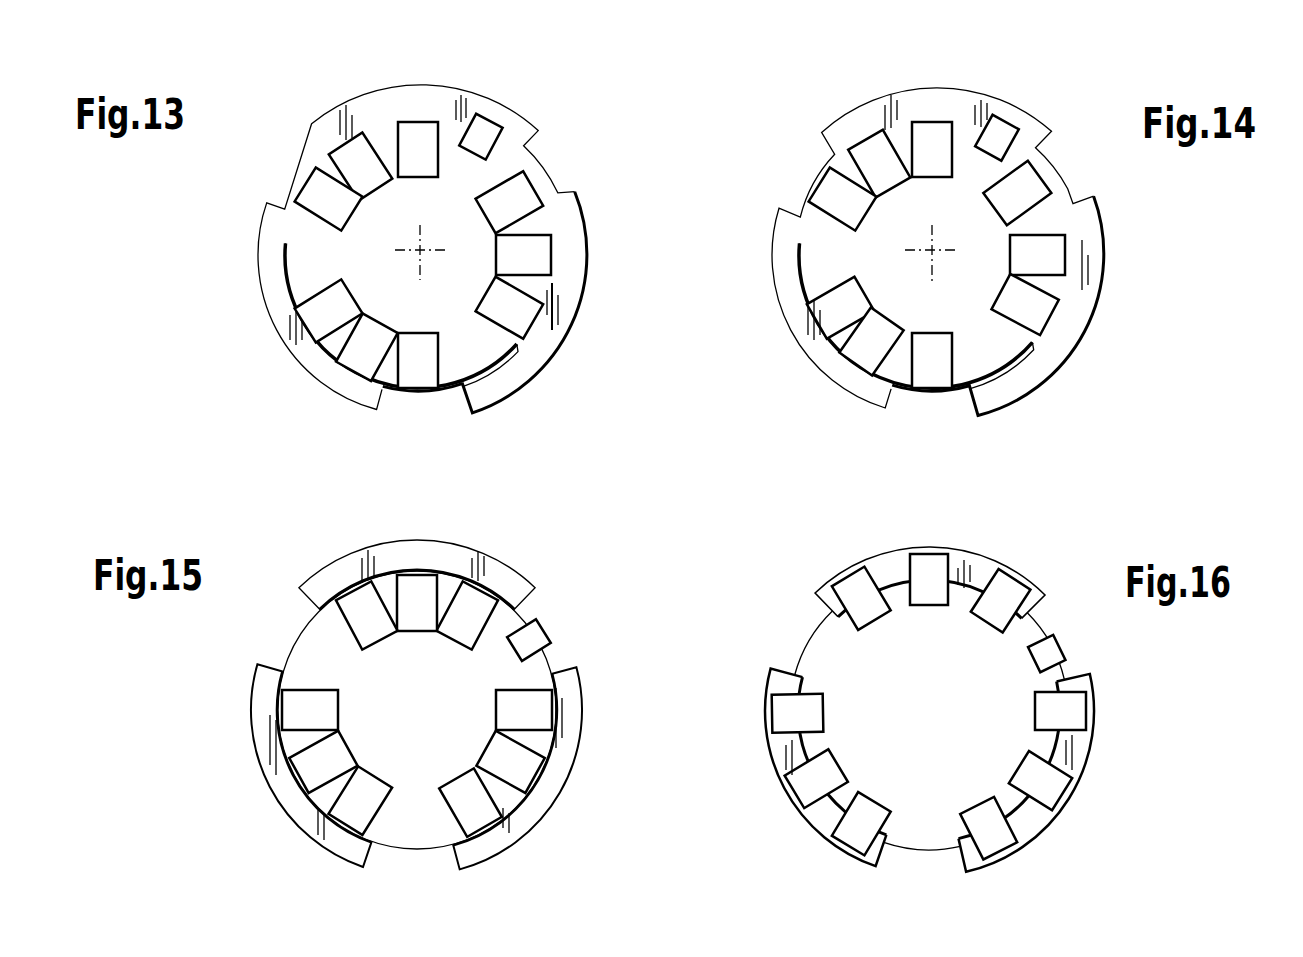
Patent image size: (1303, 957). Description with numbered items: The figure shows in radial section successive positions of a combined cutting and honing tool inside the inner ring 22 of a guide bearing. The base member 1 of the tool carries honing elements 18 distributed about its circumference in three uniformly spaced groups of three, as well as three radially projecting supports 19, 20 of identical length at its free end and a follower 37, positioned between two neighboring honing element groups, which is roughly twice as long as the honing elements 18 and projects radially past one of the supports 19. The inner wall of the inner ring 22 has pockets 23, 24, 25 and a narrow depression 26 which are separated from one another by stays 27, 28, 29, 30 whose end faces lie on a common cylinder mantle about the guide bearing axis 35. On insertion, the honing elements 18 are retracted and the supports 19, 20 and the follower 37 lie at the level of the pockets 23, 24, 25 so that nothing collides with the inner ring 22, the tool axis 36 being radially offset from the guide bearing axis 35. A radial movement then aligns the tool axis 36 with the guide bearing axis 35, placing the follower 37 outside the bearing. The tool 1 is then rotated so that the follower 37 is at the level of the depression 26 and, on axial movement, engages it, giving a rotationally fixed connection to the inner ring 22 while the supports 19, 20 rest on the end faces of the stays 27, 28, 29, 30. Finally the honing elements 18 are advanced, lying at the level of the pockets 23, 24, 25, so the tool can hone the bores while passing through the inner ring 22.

In FIG. 13, the base member 1 is at (443, 227).
In FIG. 14, the base member 1 is at (970, 228).
In FIG. 15, the base member 1 is at (410, 658).
In FIG. 13, the honing elements 18 is at (410, 140).
In FIG. 14, the honing elements 18 is at (936, 255).
In FIG. 15, the honing elements 18 is at (530, 715).
In FIG. 16, the honing elements 18 is at (853, 585).
In FIG. 13, the support 19 is at (282, 272).
In FIG. 14, the support 19 is at (808, 267).
In FIG. 15, the support 19 is at (306, 627).
In FIG. 16, the support 19 is at (930, 730).
In FIG. 13, the support 20 is at (490, 357).
In FIG. 14, the support 20 is at (1003, 357).
In FIG. 15, the support 20 is at (393, 843).
In FIG. 13, the inner ring 22 is at (572, 336).
In FIG. 14, the inner ring 22 is at (1103, 297).
In FIG. 13, the pocket 23 is at (550, 318).
In FIG. 15, the pocket 23 is at (563, 752).
In FIG. 16, the pocket 23 is at (1083, 747).
In FIG. 13, the pocket 24 is at (285, 315).
In FIG. 15, the pocket 24 is at (302, 806).
In FIG. 16, the pocket 24 is at (822, 815).
In FIG. 13, the pocket 25 is at (400, 98).
In FIG. 16, the pocket 25 is at (1032, 597).
In FIG. 13, the depression 26 is at (545, 187).
In FIG. 15, the depression 26 is at (547, 636).
In FIG. 13, the stay 27 is at (437, 400).
In FIG. 14, the stay 27 is at (930, 388).
In FIG. 15, the stay 27 is at (433, 858).
In FIG. 13, the stay 28 is at (284, 192).
In FIG. 14, the stay 28 is at (812, 168).
In FIG. 15, the stay 28 is at (300, 608).
In FIG. 13, the stay 29 is at (533, 147).
In FIG. 15, the stay 29 is at (527, 610).
In FIG. 13, the stay 30 is at (558, 194).
In FIG. 15, the stay 30 is at (552, 661).
In FIG. 13, the guide bearing axis 35 is at (420, 250).
In FIG. 14, the guide bearing axis 35 is at (934, 253).
In FIG. 13, the tool axis 36 is at (421, 253).
In FIG. 13, the follower 37 is at (480, 138).
In FIG. 14, the follower 37 is at (1002, 138).
In FIG. 15, the follower 37 is at (523, 638).